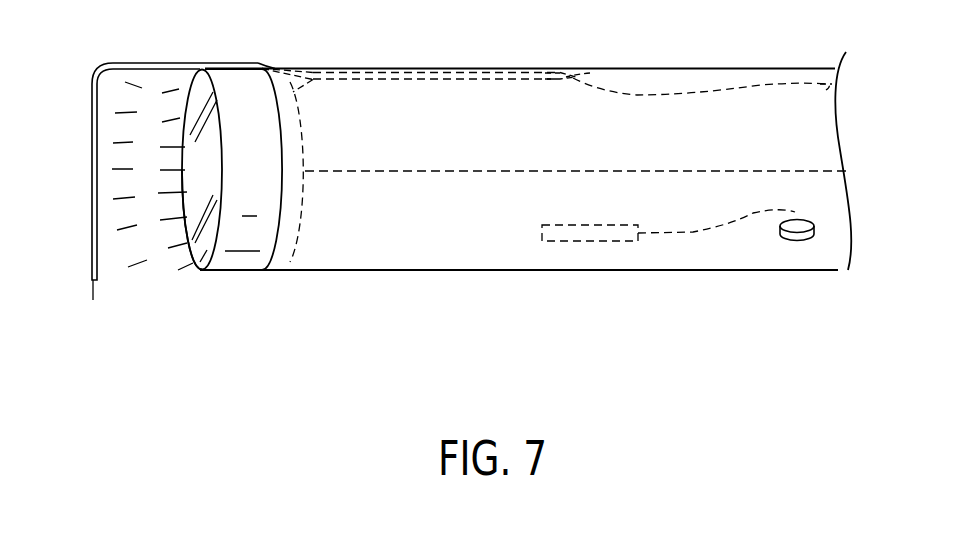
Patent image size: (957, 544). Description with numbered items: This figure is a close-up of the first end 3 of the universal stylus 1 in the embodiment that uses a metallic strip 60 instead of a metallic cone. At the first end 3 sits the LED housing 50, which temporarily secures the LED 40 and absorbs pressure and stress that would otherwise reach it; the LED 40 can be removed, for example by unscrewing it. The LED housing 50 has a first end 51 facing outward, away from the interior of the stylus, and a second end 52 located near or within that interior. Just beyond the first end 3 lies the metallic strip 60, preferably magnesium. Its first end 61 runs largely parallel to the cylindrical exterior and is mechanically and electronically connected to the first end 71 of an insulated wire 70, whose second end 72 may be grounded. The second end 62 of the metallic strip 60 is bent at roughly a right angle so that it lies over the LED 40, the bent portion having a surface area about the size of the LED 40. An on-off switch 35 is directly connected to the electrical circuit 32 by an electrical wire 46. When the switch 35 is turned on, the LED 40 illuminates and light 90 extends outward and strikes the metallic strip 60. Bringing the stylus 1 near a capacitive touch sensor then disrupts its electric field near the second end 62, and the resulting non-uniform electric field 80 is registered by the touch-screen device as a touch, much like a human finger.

The universal stylus 1 is at (665, 82).
The first end 3 is at (250, 68).
The electrical circuit 32 is at (588, 241).
The on-off switch 35 is at (798, 239).
The LED 40 is at (200, 268).
The electrical wire 46 is at (706, 234).
The LED housing 50 is at (243, 258).
The first end 51 is at (208, 70).
The second end 52 is at (318, 68).
The metallic strip 60 is at (427, 76).
The first end 61 is at (554, 70).
The second end 62 is at (93, 300).
The insulated wire 70 is at (718, 88).
The first end 71 is at (590, 73).
The second end 72 is at (828, 84).
The non-uniform electric field 80 is at (137, 263).
The light 90 is at (180, 92).